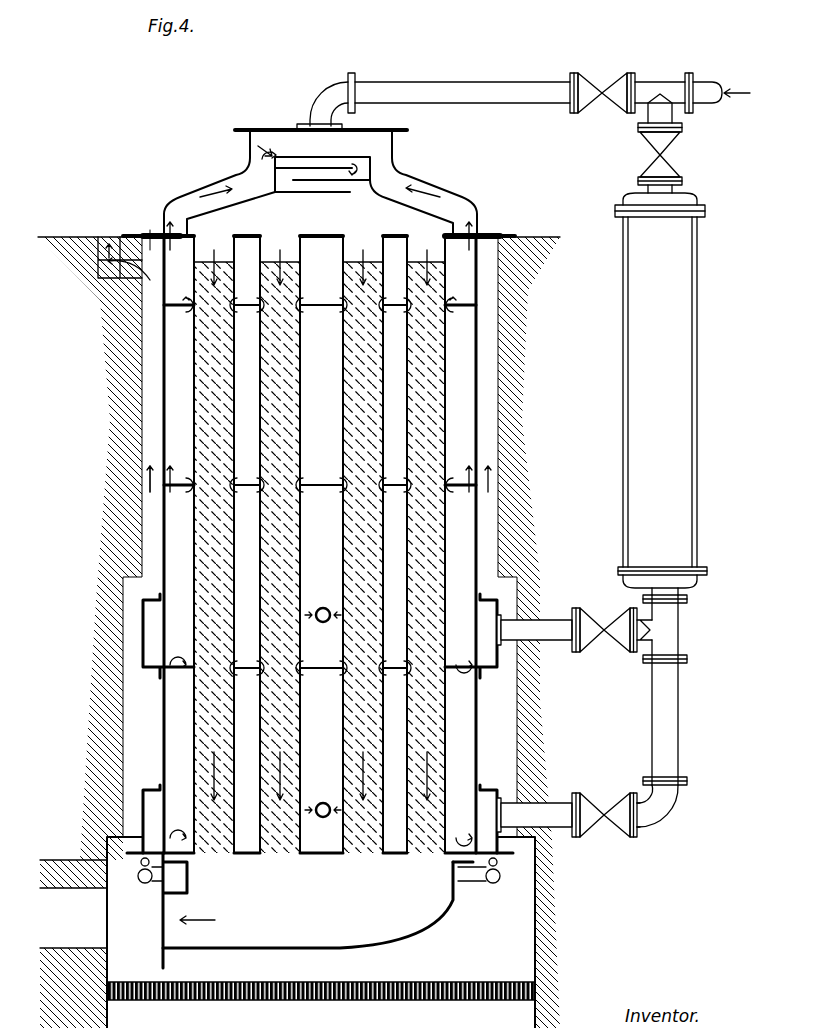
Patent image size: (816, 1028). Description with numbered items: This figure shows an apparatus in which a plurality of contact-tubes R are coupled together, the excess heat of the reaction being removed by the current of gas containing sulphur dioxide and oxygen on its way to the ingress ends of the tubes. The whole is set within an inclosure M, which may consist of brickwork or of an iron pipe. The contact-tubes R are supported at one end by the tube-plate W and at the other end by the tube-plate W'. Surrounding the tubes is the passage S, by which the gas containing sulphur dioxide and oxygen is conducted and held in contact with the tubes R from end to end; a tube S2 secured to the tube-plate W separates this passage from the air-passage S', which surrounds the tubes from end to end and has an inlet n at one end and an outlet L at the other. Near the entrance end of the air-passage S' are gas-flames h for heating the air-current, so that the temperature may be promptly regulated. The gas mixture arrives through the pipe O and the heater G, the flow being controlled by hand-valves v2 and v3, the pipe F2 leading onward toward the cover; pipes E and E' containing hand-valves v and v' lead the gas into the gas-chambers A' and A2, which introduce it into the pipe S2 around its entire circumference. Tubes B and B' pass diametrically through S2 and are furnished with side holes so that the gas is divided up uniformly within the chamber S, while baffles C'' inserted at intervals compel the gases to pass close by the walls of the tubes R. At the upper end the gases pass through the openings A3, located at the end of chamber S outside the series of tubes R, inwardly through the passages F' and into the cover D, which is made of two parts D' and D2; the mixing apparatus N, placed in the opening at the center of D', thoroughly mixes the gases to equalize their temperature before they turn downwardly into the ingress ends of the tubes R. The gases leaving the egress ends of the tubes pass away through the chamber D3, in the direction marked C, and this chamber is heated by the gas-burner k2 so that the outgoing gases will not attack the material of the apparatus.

The inclosure M is at (299, 632).
The outlet L is at (124, 248).
The cover D is at (320, 180).
The mixing apparatus N is at (314, 163).
The cover part D' is at (229, 200).
The cover part D2 is at (417, 200).
The passage F' is at (320, 175).
The supply pipe F2 is at (440, 93).
The hand-valve v2 is at (602, 85).
The pipe O is at (692, 92).
The hand-valve v3 is at (668, 143).
The heater G is at (661, 394).
The passage S is at (319, 537).
The contact-tube R is at (319, 544).
The tube-plate W is at (319, 222).
The opening A3 is at (326, 213).
The baffle C'' is at (320, 496).
The tube B' is at (323, 602).
The tube B is at (323, 799).
The gas-chamber A2 is at (316, 629).
The gas-chamber A' is at (316, 809).
The upper connecting pipe E' is at (574, 620).
The hand-valve v' is at (604, 624).
The lower connecting pipe E is at (592, 713).
The hand-valve v is at (604, 809).
The tube S2 is at (520, 350).
The air-passage S' is at (355, 361).
The tube-plate W' is at (360, 865).
The chamber D3 is at (321, 932).
The gas-burner k2 is at (320, 920).
The gas-flame h is at (312, 873).
The flow direction arrow C is at (197, 910).
The inlet n is at (321, 1003).